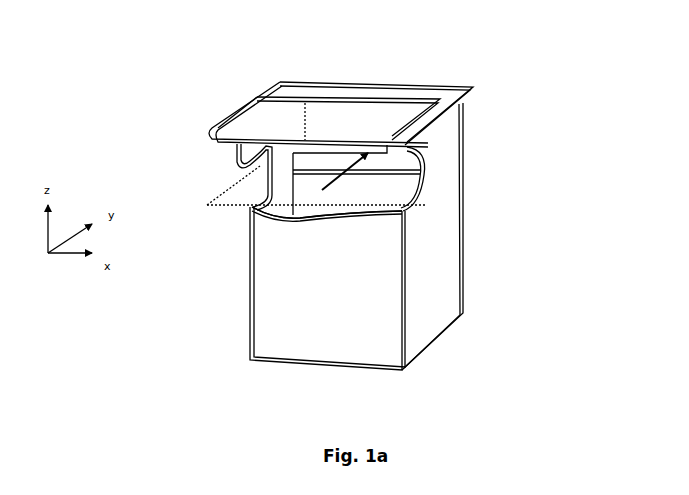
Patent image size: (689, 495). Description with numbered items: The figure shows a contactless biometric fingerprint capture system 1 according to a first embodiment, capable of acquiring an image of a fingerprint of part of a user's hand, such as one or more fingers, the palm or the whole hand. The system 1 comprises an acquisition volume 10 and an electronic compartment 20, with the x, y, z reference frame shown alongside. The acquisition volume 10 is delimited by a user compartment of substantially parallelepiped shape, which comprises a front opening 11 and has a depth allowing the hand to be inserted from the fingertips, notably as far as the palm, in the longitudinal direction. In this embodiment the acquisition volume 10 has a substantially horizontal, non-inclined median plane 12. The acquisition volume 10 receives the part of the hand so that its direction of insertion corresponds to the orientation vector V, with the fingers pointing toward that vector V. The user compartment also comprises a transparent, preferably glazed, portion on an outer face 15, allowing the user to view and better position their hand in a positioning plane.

The contactless biometric fingerprint capture system 1 is at (494, 112).
The acquisition volume 10 is at (351, 135).
The front opening 11 is at (300, 214).
The median plane 12 is at (255, 175).
The outer face 15 is at (287, 122).
The electronic compartment 20 is at (333, 285).
The orientation vector V is at (352, 167).